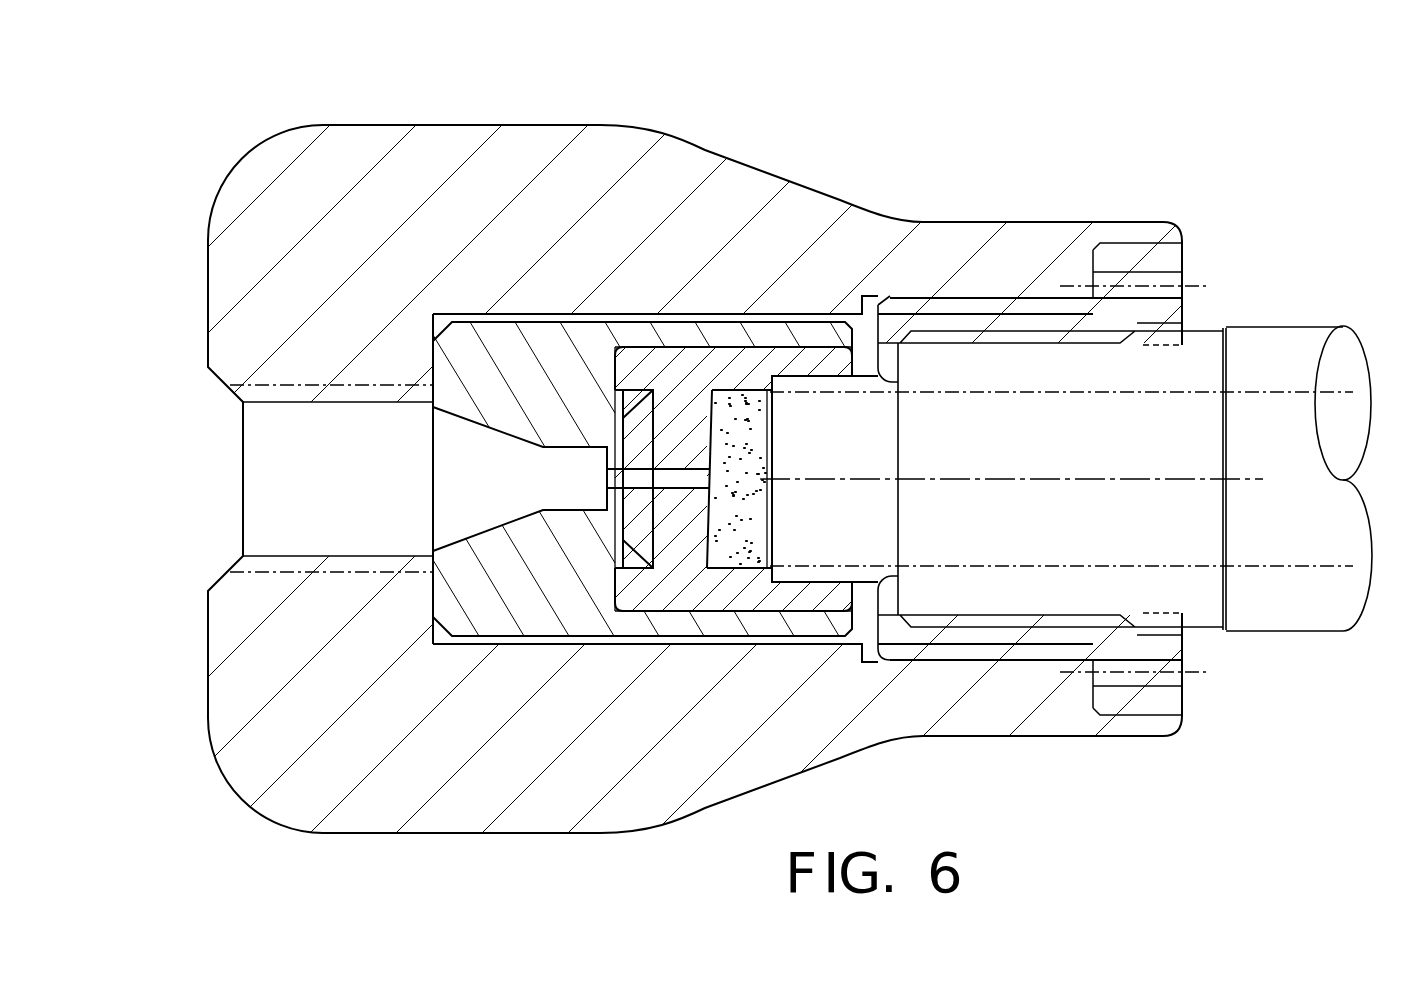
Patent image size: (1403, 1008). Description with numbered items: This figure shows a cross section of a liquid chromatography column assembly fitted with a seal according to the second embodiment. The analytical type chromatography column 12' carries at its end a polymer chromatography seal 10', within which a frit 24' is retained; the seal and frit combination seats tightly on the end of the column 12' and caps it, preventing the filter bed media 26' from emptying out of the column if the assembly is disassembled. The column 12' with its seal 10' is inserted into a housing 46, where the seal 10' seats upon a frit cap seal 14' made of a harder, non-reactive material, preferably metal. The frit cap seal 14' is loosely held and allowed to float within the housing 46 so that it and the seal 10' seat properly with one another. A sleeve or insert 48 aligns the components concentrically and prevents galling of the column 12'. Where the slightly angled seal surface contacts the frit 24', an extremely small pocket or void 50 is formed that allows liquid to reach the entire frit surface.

The housing 46 is at (430, 172).
The sleeve or insert 48 is at (1145, 307).
The frit cap seal 14' is at (642, 345).
The chromatography seal 10' is at (742, 333).
The frit 24' is at (820, 332).
The void 50 is at (705, 495).
The chromatography column 12' is at (1125, 445).
The filter bed media 26' is at (1056, 479).